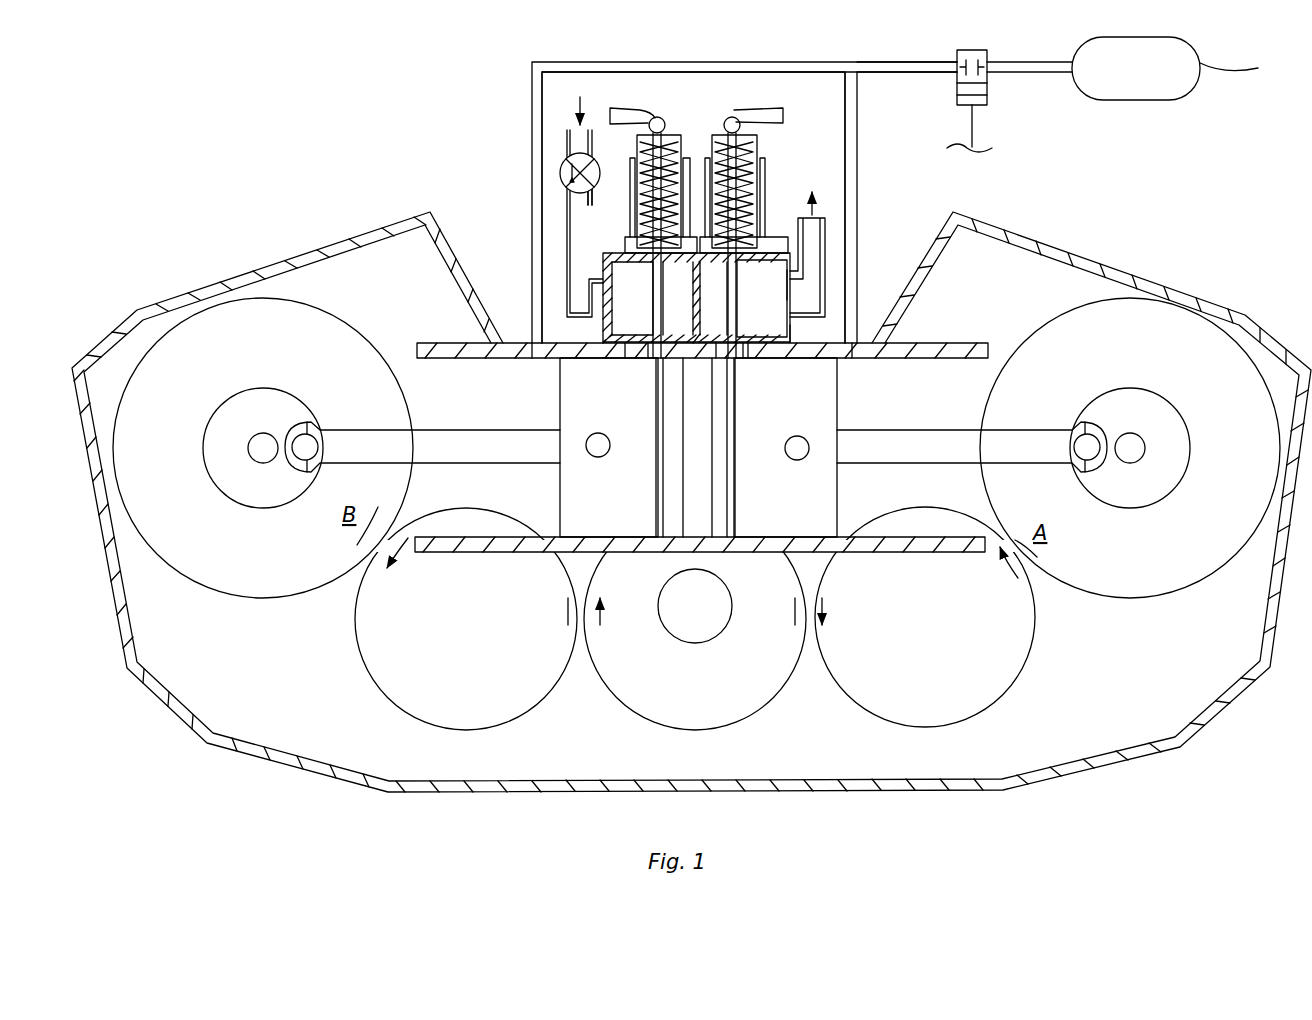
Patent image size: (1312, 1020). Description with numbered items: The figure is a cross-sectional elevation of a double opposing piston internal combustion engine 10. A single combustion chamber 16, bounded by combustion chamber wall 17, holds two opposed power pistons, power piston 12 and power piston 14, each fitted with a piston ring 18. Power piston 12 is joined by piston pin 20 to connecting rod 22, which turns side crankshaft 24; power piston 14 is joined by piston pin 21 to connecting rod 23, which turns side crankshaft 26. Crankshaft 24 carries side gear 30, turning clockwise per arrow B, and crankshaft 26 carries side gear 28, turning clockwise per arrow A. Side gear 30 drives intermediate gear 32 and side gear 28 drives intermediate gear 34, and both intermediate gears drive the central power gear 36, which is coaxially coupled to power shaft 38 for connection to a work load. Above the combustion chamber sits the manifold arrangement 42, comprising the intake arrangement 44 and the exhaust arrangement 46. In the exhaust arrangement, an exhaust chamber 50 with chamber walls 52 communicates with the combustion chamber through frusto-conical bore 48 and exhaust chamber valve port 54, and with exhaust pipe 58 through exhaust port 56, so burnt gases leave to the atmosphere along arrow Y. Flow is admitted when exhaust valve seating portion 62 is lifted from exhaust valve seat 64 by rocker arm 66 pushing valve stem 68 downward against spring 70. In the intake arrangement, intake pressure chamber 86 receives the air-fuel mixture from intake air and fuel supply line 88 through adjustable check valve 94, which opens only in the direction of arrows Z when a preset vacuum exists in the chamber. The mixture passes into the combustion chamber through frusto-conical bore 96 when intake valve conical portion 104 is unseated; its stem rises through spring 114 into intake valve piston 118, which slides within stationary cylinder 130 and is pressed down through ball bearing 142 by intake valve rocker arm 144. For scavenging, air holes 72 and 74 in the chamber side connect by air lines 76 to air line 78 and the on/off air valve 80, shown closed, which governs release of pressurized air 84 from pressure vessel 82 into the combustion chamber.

The double opposing piston internal combustion engine 10 is at (233, 226).
The power piston 12 is at (609, 447).
The power piston 14 is at (786, 447).
The combustion chamber 16 is at (850, 537).
The combustion chamber wall 17 is at (905, 358).
The piston ring 18 is at (662, 470).
The piston pin 20 is at (600, 450).
The piston pin 21 is at (797, 455).
The connecting rod 22 is at (455, 435).
The connecting rod 23 is at (972, 432).
The side crankshaft 24 is at (283, 400).
The side crankshaft 26 is at (1110, 400).
The side gear 28 is at (1175, 598).
The side gear 30 is at (245, 600).
The intermediate gear 32 is at (362, 670).
The intermediate gear 34 is at (1030, 655).
The power gear 36 is at (720, 722).
The power shaft 38 is at (702, 643).
The manifold arrangement 42 is at (493, 124).
The intake arrangement 44 is at (618, 245).
The exhaust arrangement 46 is at (768, 254).
The frusto-conical bore 48 is at (750, 358).
The exhaust chamber 50 is at (696, 298).
The chamber walls 52 is at (790, 332).
The exhaust chamber valve port 54 is at (695, 298).
The exhaust port 56 is at (785, 292).
The exhaust pipe 58 is at (825, 228).
The exhaust valve seating portion 62 is at (745, 358).
The exhaust valve seat 64 is at (718, 358).
The rocker arm 66 is at (760, 110).
The valve stem 68 is at (750, 195).
The spring 70 is at (753, 145).
The air hole 72 is at (540, 358).
The air hole 74 is at (855, 358).
The air lines 76 is at (690, 62).
The air line 78 is at (900, 62).
The on/off air valve 80 is at (987, 88).
The pressure vessel 82 is at (1243, 68).
The pressurized air 84 is at (1093, 68).
The intake pressure chamber 86 is at (632, 298).
The intake air and fuel supply line 88 is at (592, 218).
The adjustable check valve 94 is at (559, 177).
The frusto-conical bore 96 is at (630, 358).
The intake valve conical portion 104 is at (652, 358).
The spring 114 is at (662, 157).
The intake valve piston 118 is at (683, 153).
The stationary cylinder 130 is at (633, 175).
The ball bearing 142 is at (655, 117).
The intake valve rocker arm 144 is at (620, 113).